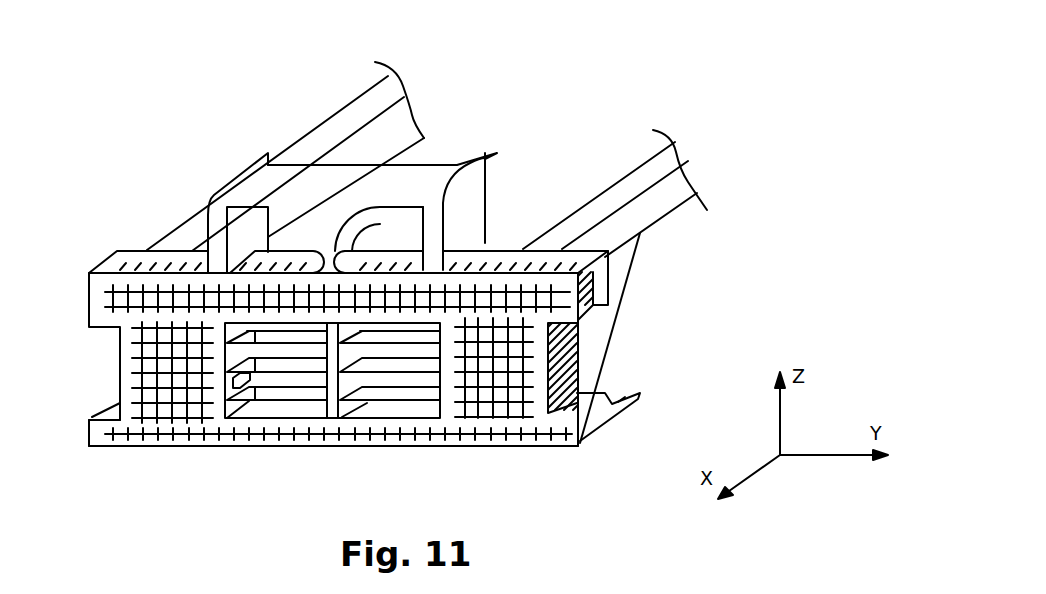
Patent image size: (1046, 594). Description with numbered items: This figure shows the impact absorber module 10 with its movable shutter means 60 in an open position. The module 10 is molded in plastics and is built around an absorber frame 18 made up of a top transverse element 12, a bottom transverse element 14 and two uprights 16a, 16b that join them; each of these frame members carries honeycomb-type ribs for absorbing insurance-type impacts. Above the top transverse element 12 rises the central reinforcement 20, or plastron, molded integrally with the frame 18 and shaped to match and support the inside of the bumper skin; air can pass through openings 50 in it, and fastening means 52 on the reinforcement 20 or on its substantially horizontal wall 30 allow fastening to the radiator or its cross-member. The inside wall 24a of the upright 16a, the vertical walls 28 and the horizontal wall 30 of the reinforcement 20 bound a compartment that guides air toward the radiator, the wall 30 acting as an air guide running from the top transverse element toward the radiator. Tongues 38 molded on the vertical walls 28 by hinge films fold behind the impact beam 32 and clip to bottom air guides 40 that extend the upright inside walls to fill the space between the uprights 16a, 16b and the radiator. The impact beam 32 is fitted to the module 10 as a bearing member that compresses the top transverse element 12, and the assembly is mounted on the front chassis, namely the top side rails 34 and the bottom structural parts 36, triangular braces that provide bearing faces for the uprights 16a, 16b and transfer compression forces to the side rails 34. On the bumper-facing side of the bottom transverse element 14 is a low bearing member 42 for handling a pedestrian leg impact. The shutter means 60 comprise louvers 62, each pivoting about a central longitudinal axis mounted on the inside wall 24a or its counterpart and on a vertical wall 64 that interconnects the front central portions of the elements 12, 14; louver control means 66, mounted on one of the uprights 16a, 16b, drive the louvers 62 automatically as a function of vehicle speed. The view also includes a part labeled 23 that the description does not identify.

The impact absorber module 10 is at (86, 218).
The top transverse element 12 is at (577, 302).
The bottom transverse element 14 is at (560, 427).
The upright 16a is at (135, 380).
The upright 16b is at (543, 355).
The absorber frame 18 is at (152, 460).
The central reinforcement 20 is at (445, 155).
The bus bar flap 23 is at (470, 203).
The inside wall 24a is at (225, 365).
The vertical walls 28 is at (243, 236).
The horizontal wall 30 is at (255, 185).
The impact beam 32 is at (600, 275).
The side rails 34 is at (352, 118).
The bottom structural parts 36 is at (590, 337).
The tongues 38 is at (487, 240).
The bottom air guide 40 is at (633, 403).
The low bearing member 42 is at (493, 440).
The openings 50 is at (300, 240).
The fastening means 52 is at (485, 153).
The movable shutter means 60 is at (313, 415).
The louvers 62 is at (408, 333).
The vertical wall 64 is at (350, 404).
The louver control means 66 is at (243, 382).